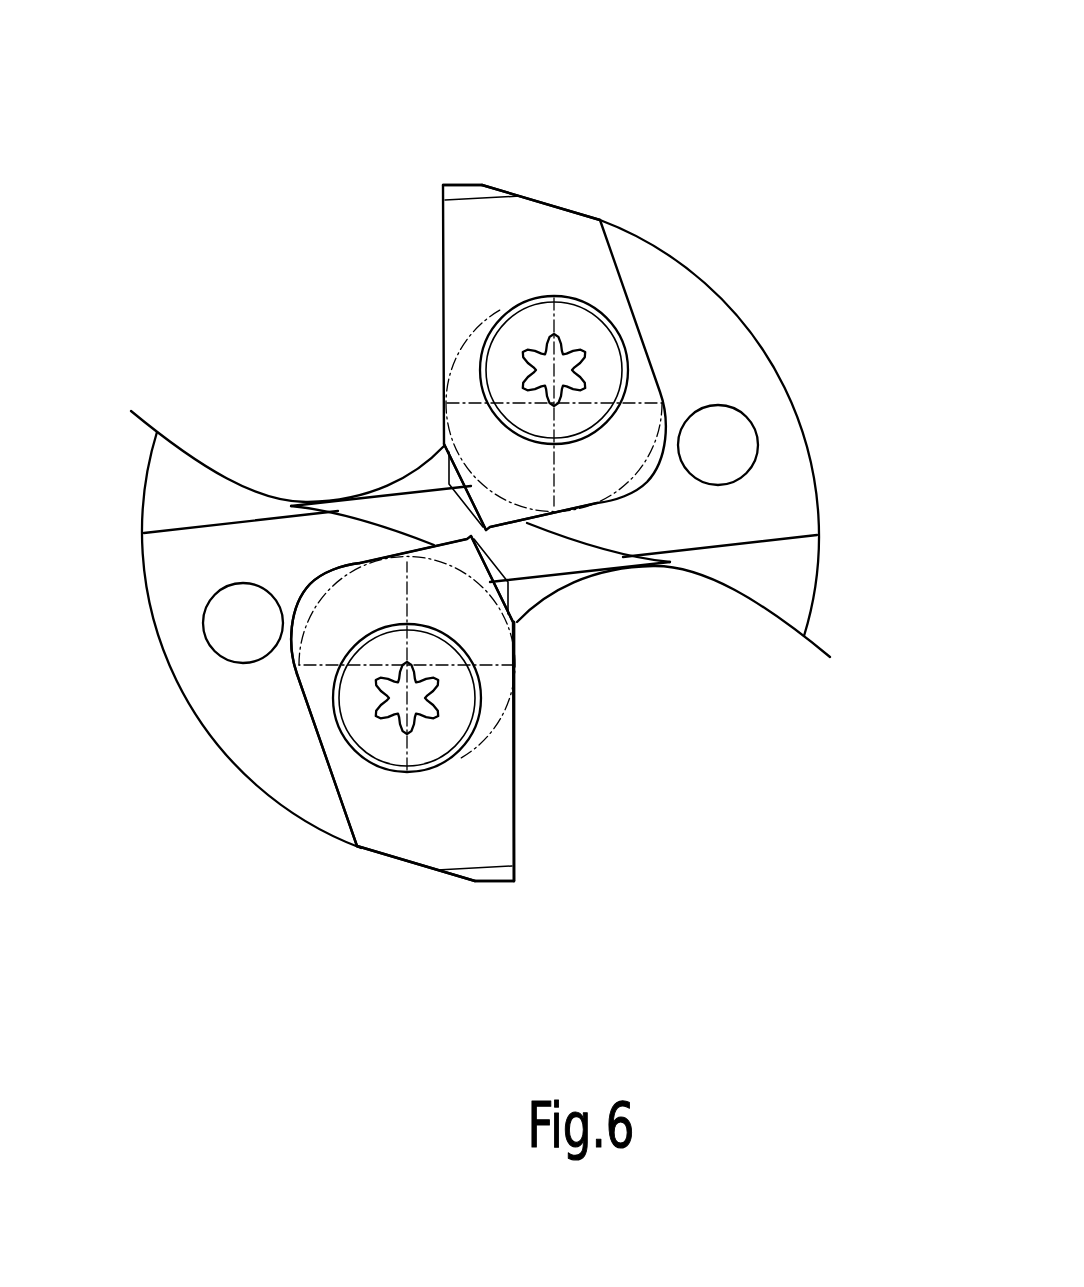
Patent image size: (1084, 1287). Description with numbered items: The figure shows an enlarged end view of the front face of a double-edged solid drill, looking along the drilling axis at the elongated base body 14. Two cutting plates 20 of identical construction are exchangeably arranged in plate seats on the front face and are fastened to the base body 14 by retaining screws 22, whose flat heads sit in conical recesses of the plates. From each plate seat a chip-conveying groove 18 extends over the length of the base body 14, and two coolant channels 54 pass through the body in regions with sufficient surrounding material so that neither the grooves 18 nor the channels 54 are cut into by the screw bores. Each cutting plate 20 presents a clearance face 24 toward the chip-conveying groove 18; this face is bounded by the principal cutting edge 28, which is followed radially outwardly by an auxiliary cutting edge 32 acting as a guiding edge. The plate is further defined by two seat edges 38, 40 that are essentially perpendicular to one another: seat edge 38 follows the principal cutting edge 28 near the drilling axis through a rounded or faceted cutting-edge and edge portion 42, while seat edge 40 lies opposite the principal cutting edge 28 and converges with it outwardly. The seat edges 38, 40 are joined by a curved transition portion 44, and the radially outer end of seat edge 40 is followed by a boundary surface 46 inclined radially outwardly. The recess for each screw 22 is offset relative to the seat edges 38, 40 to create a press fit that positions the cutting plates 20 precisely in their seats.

The base body 14 is at (708, 360).
The chip-conveying groove 18 is at (260, 492).
The cutting plate 20 is at (586, 292).
The retaining screw 22 is at (593, 353).
The clearance face 24 is at (480, 758).
The principal cutting edge 28 is at (512, 822).
The auxiliary cutting edge 32 is at (467, 190).
The seat edge 38 is at (597, 507).
The seat edge 40 is at (317, 727).
The cutting-edge and edge portion 42 is at (493, 552).
The curved transition portion 44 is at (300, 597).
The boundary surface 46 is at (522, 192).
The coolant channel 54 is at (730, 445).